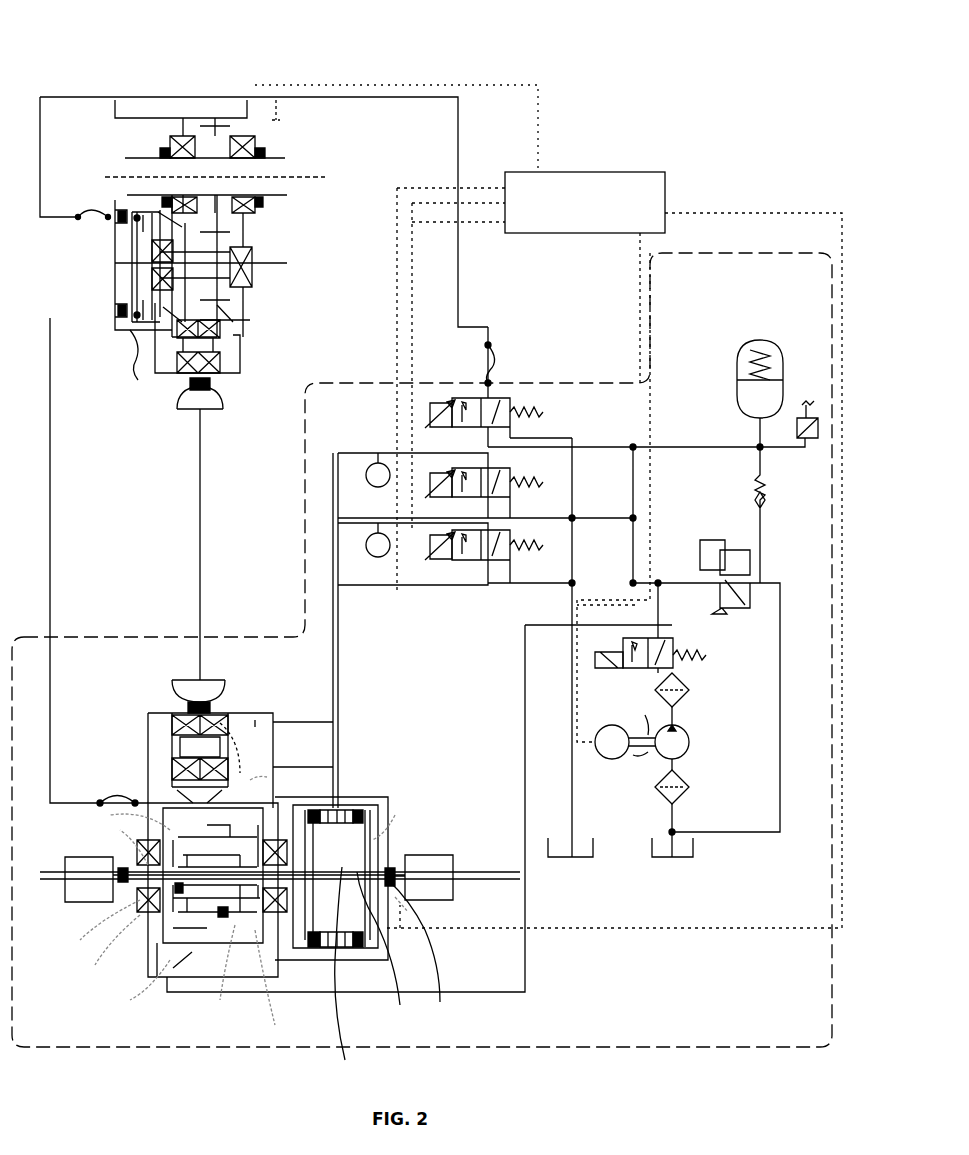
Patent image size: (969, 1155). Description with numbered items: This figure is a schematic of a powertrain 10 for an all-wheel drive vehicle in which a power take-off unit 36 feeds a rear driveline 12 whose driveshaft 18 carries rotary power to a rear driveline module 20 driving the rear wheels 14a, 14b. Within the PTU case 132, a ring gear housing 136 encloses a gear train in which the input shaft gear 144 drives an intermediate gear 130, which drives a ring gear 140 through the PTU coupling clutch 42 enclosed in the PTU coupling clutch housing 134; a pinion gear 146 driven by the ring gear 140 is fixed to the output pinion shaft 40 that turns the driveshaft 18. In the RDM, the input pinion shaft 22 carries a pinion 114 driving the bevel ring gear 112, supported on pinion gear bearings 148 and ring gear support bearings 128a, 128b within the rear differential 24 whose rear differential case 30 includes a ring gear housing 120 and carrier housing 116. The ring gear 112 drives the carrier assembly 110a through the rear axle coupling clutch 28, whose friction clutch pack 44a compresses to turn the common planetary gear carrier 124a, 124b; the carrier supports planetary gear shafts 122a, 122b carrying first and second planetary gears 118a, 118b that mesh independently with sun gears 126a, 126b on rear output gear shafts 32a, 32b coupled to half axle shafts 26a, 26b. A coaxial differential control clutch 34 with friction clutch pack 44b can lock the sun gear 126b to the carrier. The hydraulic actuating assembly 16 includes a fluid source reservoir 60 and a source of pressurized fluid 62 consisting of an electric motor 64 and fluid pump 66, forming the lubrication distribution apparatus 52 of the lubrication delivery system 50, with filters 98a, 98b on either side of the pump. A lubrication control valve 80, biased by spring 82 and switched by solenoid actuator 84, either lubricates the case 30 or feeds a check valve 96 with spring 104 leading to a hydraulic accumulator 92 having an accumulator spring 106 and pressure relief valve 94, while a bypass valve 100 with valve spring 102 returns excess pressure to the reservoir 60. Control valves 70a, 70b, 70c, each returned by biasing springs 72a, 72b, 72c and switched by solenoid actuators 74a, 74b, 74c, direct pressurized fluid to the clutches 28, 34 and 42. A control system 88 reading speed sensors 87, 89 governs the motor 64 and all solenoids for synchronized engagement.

The powertrain 10 is at (135, 82).
The rear driveline 12 is at (78, 528).
The rear wheel 14a is at (65, 876).
The rear wheel 14b is at (445, 876).
The hydraulic actuating assembly 16 is at (625, 880).
The driveshaft 18 is at (200, 502).
The rear driveline module 20 is at (165, 660).
The input pinion shaft 22 is at (180, 702).
The rear differential 24 is at (194, 902).
The half axle shaft 26a is at (140, 900).
The half axle shaft 26b is at (426, 954).
The rear axle coupling clutch 28 is at (314, 808).
The rear differential case 30 is at (278, 718).
The rear output gear shaft 32a is at (140, 856).
The rear output gear shaft 32b is at (395, 868).
The differential control clutch 34 is at (360, 808).
The power take-off unit 36 is at (335, 168).
The output pinion shaft 40 is at (210, 382).
The PTU coupling clutch 42 is at (120, 361).
The friction clutch pack 44a is at (354, 974).
The friction clutch pack 44b is at (381, 950).
The lubrication delivery system 50 is at (532, 685).
The lubrication distribution apparatus 52 is at (690, 745).
The fluid source reservoir 60 is at (680, 857).
The source of pressurized fluid 62 is at (607, 770).
The electric motor 64 is at (615, 760).
The fluid pump 66 is at (688, 732).
The first control valve 70a is at (500, 532).
The second control valve 70b is at (500, 470).
The control valve 70c is at (500, 400).
The biasing spring 72a is at (543, 550).
The biasing spring 72b is at (543, 486).
The biasing spring 72c is at (543, 412).
The solenoid actuator 74a is at (430, 553).
The solenoid actuator 74b is at (430, 488).
The solenoid actuator 74c is at (430, 418).
The lubrication control valve 80 is at (668, 640).
The lubrication valve biasing spring 82 is at (700, 655).
The solenoid actuator 84 is at (595, 660).
The speed sensor 87 is at (282, 100).
The control system 88 is at (548, 506).
The speed sensor 89 is at (413, 909).
The hydraulic accumulator 92 is at (790, 400).
The pressure relief valve 94 is at (775, 438).
The check valve 96 is at (755, 492).
The filter 98a is at (690, 787).
The filter 98b is at (690, 690).
The bypass valve 100 is at (738, 560).
The valve spring 102 is at (732, 600).
The spring 104 is at (768, 480).
The accumulator spring 106 is at (742, 356).
The carrier assembly 110a is at (215, 945).
The bevel ring gear 112 is at (172, 790).
The pinion 114 is at (240, 730).
The carrier housing 116 is at (318, 930).
The first planetary gear 118a is at (141, 991).
The second planetary gear 118b is at (287, 772).
The ring gear housing 120 is at (300, 770).
The planetary gear shaft 122a is at (120, 798).
The planetary gear shaft 122b is at (293, 984).
The common planetary gear carrier 124a is at (100, 946).
The common planetary gear carrier 124b is at (407, 817).
The first sun gear 126a is at (120, 833).
The second sun gear 126b is at (224, 968).
The ring gear support bearing 128a is at (85, 925).
The ring gear support bearing 128b is at (280, 912).
The intermediate gear 130 is at (240, 236).
The PTU case 132 is at (268, 262).
The PTU coupling clutch housing 134 is at (114, 262).
The ring gear housing 136 is at (235, 350).
The ring gear 140 is at (165, 208).
The input shaft gear 144 is at (232, 128).
The pinion gear 146 is at (232, 325).
The pinion gear bearings 148 is at (172, 726).